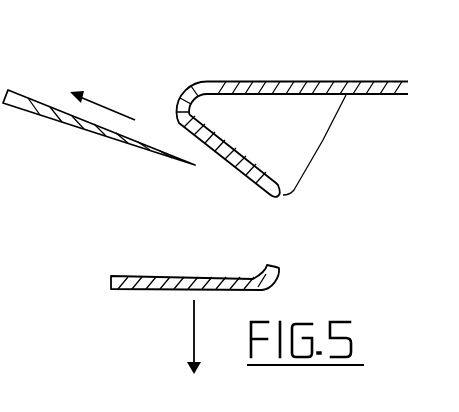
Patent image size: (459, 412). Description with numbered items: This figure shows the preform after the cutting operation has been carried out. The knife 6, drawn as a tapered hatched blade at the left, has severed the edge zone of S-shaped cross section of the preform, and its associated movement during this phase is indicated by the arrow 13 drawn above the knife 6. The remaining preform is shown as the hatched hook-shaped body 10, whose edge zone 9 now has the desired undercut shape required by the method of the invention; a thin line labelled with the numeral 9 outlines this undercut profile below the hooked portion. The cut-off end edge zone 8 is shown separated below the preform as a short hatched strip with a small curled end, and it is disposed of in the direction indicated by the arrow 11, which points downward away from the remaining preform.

The knife 6 is at (40, 116).
The end edge zone 8 is at (124, 284).
The edge zone 9 is at (323, 140).
The hook member 10 is at (277, 90).
The arrow 11 is at (193, 343).
The arrow 13 is at (103, 104).